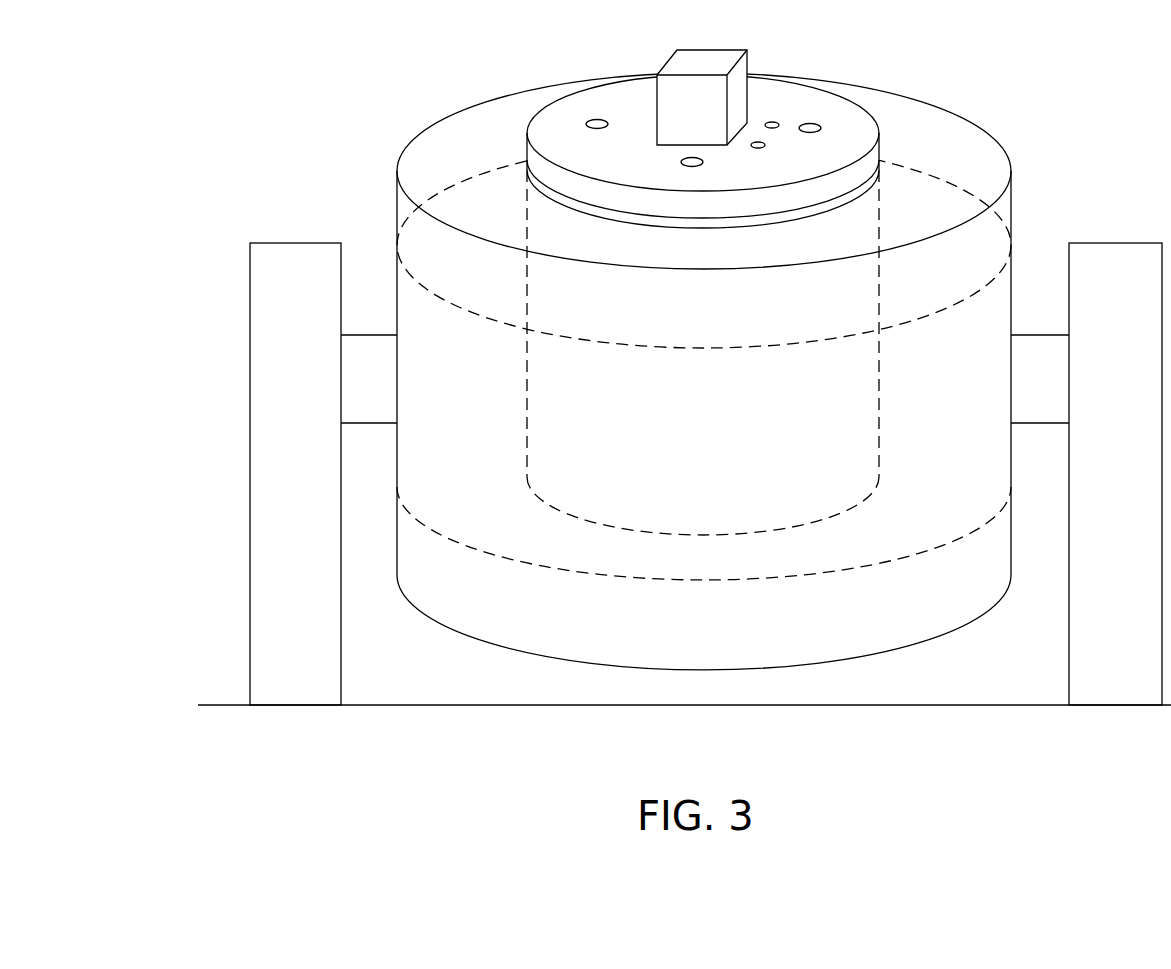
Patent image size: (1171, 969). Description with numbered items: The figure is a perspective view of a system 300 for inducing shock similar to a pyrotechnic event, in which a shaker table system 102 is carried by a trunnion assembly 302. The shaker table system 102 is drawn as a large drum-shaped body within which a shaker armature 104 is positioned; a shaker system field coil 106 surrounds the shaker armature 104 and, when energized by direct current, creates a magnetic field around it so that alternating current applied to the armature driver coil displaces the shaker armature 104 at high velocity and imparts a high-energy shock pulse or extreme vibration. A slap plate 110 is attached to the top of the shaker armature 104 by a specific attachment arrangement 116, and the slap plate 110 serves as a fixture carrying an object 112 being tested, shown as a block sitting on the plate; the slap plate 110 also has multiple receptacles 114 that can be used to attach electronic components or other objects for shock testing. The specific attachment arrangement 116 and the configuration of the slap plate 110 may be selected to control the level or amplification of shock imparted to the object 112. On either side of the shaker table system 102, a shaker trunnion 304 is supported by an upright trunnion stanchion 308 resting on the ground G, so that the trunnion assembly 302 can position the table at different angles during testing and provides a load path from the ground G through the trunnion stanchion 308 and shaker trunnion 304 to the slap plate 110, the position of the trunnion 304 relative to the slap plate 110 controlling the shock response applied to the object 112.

The system for inducing shock 300 is at (628, 352).
The trunnion assembly 302 is at (628, 454).
The shaker trunnion 304 is at (370, 333).
The trunnion stanchion 308 is at (250, 490).
The shaker table system 102 is at (710, 364).
The shaker armature 104 is at (692, 523).
The shaker system field coil 106 is at (885, 537).
The slap plate 110 is at (720, 114).
The object 112 is at (705, 53).
The receptacles 114 is at (778, 115).
The specific attachment arrangement 116 is at (590, 116).
The ground G is at (220, 707).